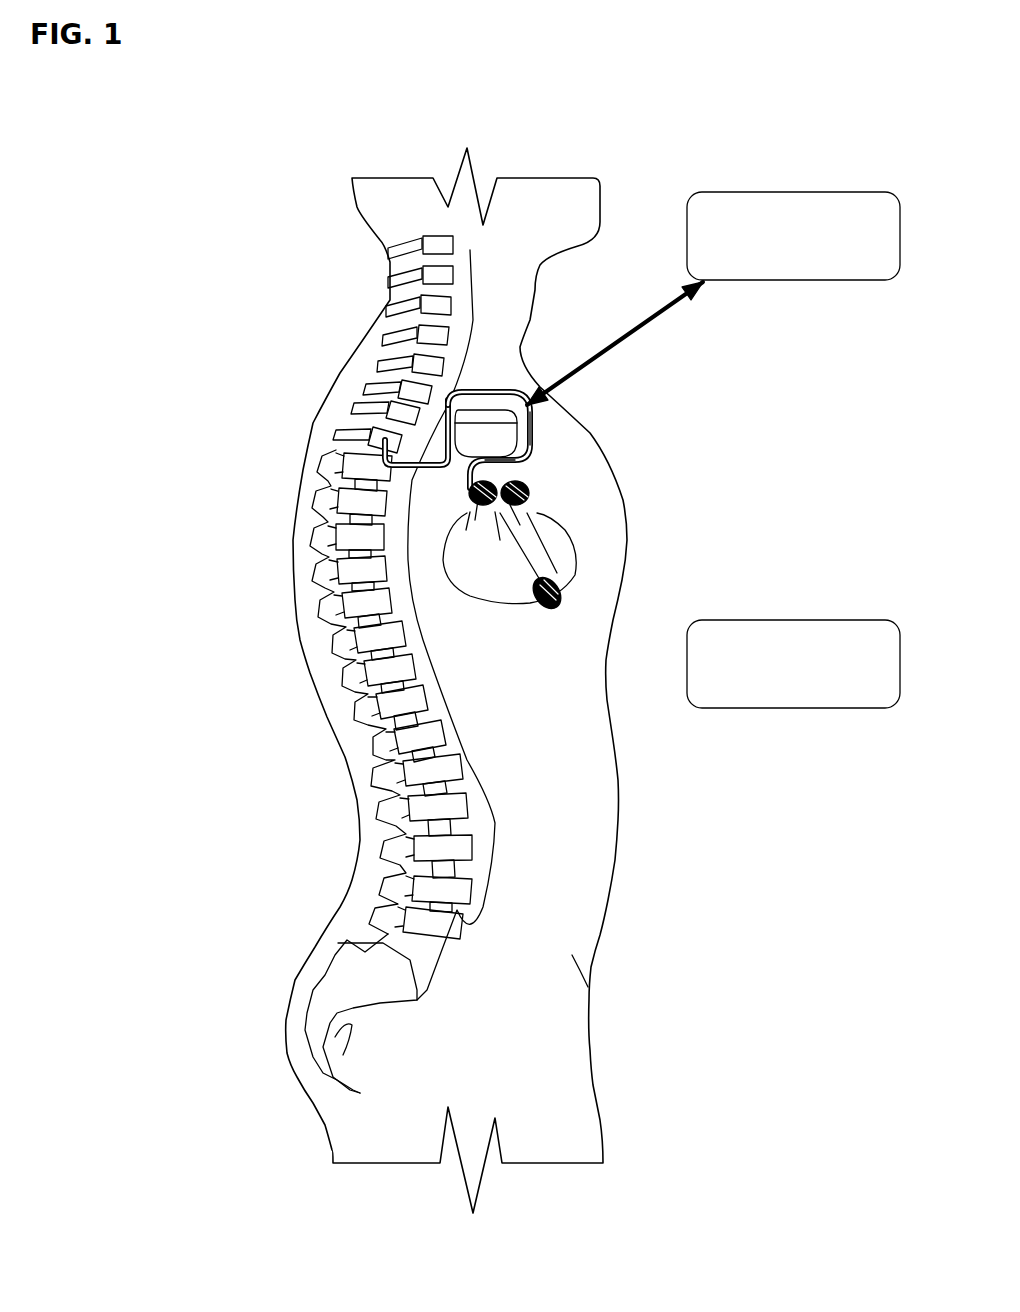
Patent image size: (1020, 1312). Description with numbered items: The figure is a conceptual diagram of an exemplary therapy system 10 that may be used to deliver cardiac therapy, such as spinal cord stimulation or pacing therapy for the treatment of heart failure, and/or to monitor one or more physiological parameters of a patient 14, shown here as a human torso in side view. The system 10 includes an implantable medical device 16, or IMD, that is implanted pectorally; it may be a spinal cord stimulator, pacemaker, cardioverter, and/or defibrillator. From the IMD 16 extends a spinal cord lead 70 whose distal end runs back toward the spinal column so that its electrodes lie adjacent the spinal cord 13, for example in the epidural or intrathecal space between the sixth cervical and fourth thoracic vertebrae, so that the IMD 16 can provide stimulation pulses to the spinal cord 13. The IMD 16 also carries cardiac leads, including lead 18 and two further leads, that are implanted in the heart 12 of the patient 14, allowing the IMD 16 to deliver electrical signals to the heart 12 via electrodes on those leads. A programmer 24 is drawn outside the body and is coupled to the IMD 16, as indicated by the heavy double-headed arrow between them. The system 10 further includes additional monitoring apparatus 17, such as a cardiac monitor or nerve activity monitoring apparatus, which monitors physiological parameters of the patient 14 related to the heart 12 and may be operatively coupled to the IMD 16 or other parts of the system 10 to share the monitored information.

The therapy system 10 is at (300, 258).
The heart 12 is at (575, 537).
The spinal cord 13 is at (375, 415).
The patient 14 is at (293, 522).
The implantable medical device 16 is at (477, 403).
The additional monitoring apparatus 17 is at (851, 705).
The lead 18 is at (537, 440).
The programmer 24 is at (779, 263).
The spinal cord lead 70 is at (380, 448).